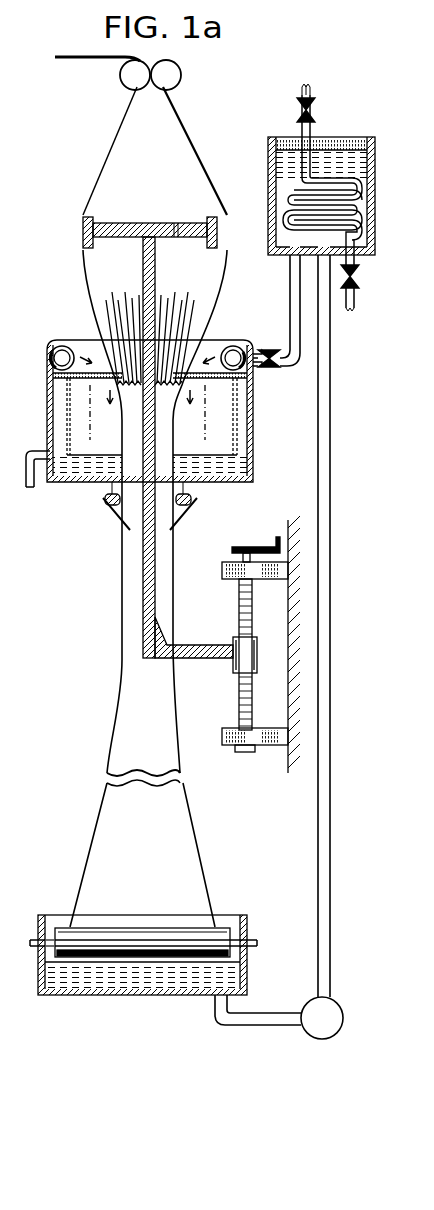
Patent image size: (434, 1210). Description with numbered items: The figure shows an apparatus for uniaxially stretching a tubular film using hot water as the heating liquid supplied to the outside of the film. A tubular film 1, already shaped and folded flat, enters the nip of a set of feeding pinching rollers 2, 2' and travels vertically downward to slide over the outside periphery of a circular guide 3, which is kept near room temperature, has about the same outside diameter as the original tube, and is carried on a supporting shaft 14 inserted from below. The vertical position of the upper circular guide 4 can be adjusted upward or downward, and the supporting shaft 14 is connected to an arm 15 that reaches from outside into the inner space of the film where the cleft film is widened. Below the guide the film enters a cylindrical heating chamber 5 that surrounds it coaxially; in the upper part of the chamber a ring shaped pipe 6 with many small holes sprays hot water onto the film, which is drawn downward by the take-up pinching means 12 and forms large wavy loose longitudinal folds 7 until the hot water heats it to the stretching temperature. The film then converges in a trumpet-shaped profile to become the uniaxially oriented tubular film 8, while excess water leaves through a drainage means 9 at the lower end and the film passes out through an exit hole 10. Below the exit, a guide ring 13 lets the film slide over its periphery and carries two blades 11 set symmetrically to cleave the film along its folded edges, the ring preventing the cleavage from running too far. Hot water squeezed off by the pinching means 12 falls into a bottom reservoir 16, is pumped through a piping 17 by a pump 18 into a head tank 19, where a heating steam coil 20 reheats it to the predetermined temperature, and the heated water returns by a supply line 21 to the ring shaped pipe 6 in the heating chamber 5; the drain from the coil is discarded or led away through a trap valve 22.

The tubular film 1 is at (90, 58).
The feeding pinching roller 2 is at (127, 84).
The feeding pinching roller 2' is at (182, 75).
The circular guide 3 is at (123, 223).
The upper circular guide 4 is at (181, 212).
The cylindrical heating chamber 5 is at (47, 398).
The ring shaped pipe 6 is at (60, 346).
The filament streams 7 is at (181, 375).
The uniaxially oriented tubular film 8 is at (178, 418).
The drainage means 9 is at (26, 478).
The exit hole 10 is at (106, 495).
The blades 11 is at (112, 512).
The take-up pinching means 12 is at (131, 928).
The guide ring 13 is at (104, 502).
The supporting shaft 14 is at (143, 433).
The arm 15 is at (160, 658).
The bottom reservoir 16 is at (100, 996).
The piping 17 is at (252, 1026).
The pump 18 is at (343, 1018).
The head tank 19 is at (364, 137).
The heating steam coil 20 is at (288, 225).
The supply pipe 21 is at (290, 305).
The trap valve 22 is at (359, 278).